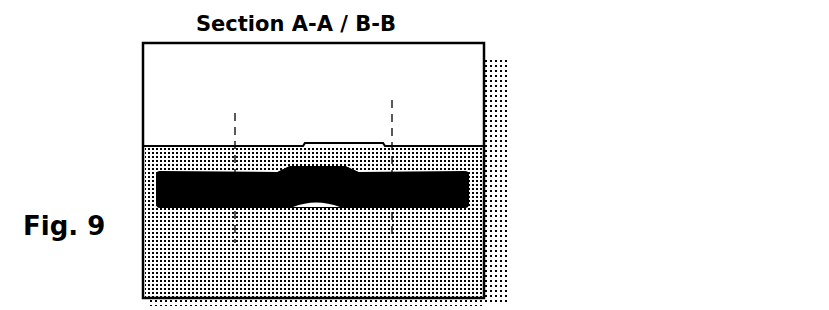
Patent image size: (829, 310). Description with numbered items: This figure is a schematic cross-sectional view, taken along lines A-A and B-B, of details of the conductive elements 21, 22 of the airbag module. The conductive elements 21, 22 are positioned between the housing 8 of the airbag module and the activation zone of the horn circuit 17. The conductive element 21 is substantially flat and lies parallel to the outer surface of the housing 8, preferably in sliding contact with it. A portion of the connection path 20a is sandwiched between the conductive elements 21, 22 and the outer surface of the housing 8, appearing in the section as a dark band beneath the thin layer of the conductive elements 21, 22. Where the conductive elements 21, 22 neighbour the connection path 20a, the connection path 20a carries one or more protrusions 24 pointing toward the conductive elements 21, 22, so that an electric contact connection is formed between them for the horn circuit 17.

The housing 8 is at (468, 255).
The conductive element 21 is at (373, 131).
The conductive element 22 is at (463, 158).
The connection path 20a is at (382, 187).
The horn circuit 17 is at (467, 195).
The protrusion 24 is at (315, 170).